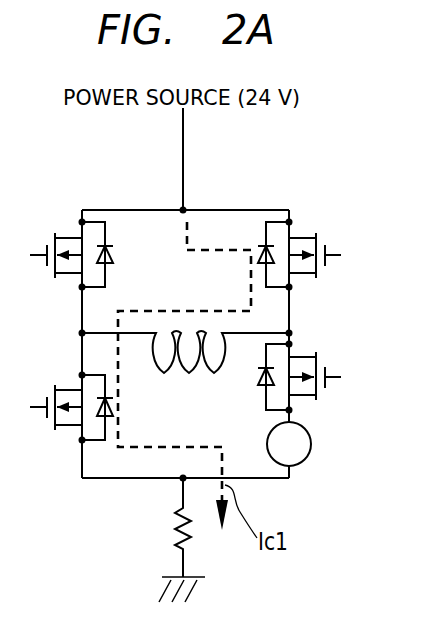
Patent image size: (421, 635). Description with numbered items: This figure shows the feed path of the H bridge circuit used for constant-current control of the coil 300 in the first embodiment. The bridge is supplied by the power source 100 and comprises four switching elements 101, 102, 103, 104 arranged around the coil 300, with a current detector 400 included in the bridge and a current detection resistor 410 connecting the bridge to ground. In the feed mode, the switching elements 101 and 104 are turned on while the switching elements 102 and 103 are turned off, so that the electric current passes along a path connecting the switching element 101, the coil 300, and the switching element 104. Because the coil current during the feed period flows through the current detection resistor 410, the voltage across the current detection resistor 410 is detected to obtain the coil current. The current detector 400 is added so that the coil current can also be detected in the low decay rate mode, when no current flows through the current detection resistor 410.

The power source 100 is at (185, 118).
The switching element 101 is at (69, 238).
The switching element 102 is at (300, 238).
The switching element 103 is at (69, 390).
The switching element 104 is at (300, 357).
The coil 300 is at (189, 373).
The current detector 400 is at (311, 444).
The current detection resistor 410 is at (175, 522).